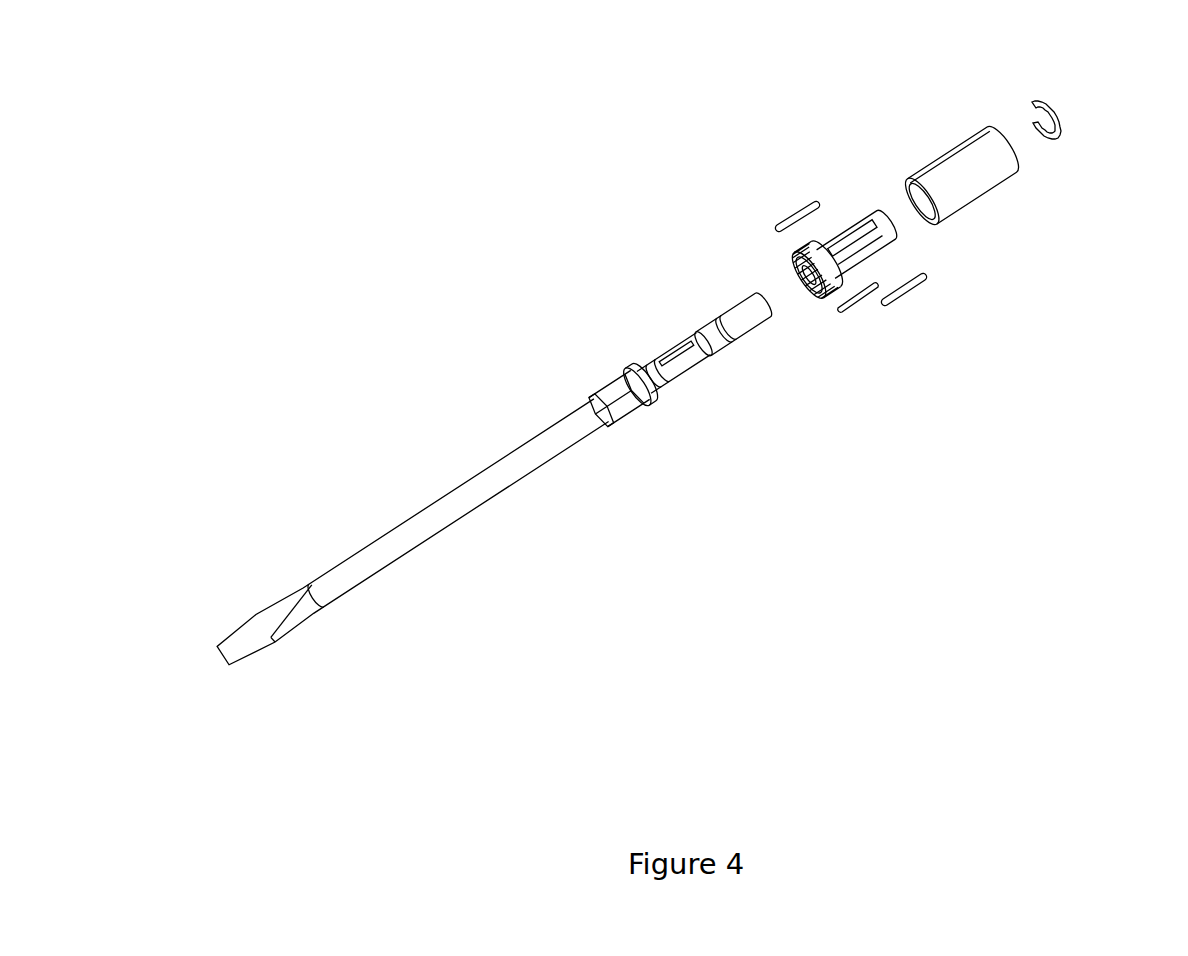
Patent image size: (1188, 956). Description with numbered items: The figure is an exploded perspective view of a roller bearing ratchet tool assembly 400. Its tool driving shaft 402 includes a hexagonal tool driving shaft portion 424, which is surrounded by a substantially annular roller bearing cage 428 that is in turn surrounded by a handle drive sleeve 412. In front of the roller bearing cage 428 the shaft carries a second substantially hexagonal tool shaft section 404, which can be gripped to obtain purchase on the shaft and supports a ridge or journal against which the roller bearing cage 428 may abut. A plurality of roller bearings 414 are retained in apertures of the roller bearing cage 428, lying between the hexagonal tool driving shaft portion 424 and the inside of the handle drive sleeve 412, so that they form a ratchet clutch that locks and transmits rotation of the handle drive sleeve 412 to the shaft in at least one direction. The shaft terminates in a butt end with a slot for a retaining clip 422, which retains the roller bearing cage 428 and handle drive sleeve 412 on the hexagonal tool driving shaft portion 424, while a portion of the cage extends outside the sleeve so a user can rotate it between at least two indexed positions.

The ratchet tool assembly 400 is at (478, 260).
The tool driving shaft 402 is at (458, 531).
The second substantially hexagonal tool shaft section 404 is at (622, 426).
The handle drive sleeve 412 is at (948, 142).
The roller bearings 414 is at (788, 205).
The retaining clip 422 is at (1063, 105).
The hexagonal tool driving shaft portion 424 is at (668, 345).
The roller bearing cage 428 is at (873, 259).